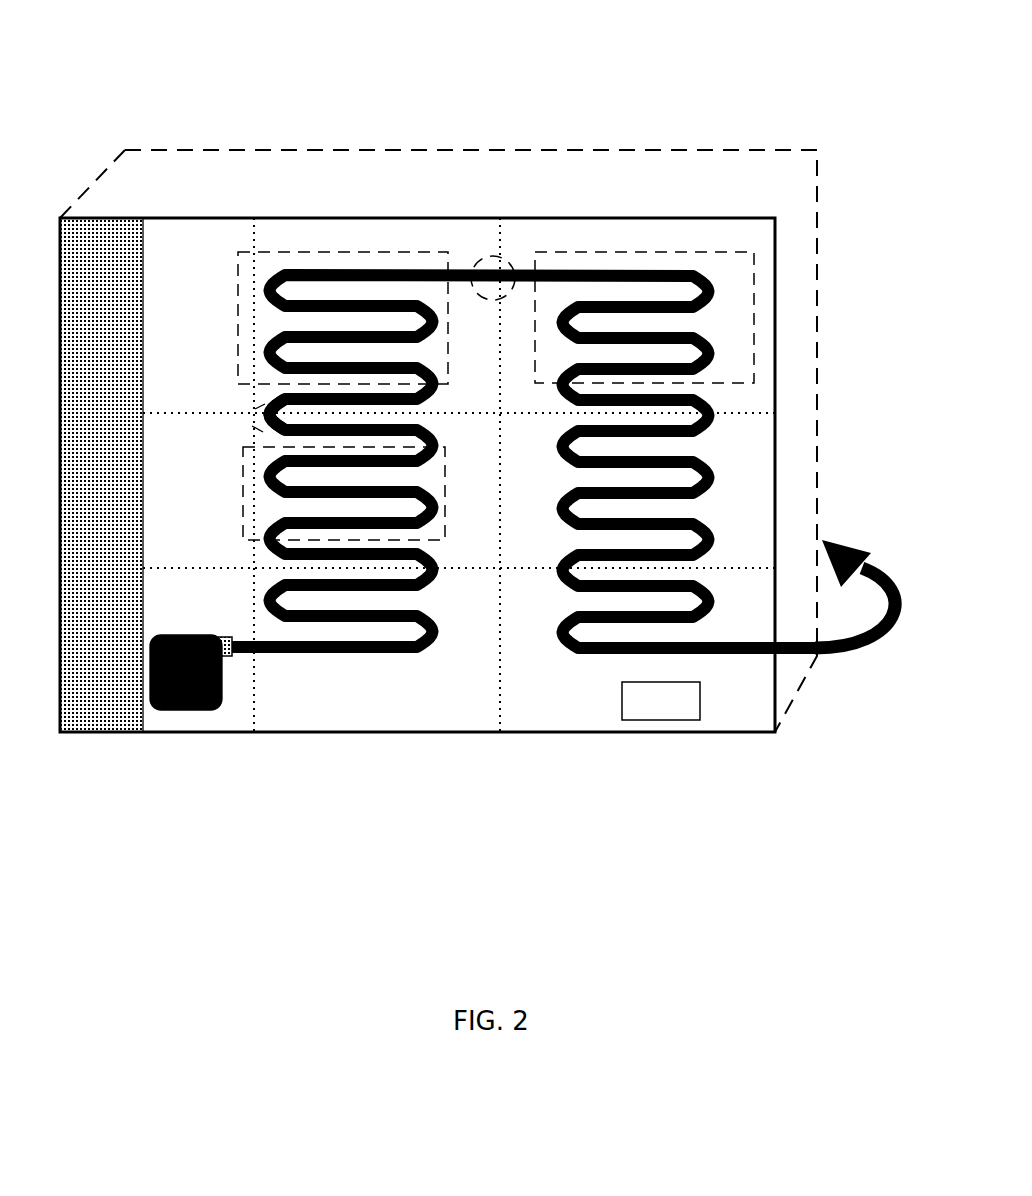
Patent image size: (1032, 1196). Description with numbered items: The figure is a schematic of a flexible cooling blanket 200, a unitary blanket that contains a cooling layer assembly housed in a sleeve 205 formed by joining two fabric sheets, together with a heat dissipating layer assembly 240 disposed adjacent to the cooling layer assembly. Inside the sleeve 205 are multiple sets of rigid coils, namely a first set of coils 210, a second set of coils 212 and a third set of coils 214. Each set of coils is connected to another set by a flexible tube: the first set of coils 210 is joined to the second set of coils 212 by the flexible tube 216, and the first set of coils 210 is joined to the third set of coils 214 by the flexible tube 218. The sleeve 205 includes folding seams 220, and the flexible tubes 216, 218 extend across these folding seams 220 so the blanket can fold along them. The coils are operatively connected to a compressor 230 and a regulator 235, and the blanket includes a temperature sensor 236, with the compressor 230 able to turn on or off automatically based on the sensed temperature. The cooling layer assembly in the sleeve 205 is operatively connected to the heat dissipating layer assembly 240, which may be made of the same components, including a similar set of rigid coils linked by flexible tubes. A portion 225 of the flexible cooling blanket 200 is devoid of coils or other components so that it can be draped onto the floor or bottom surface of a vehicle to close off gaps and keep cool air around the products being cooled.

The flexible cooling blanket 200 is at (709, 62).
The sleeve 205 is at (652, 209).
The first set of coils 210 is at (334, 248).
The second set of coils 212 is at (760, 297).
The third set of coils 214 is at (237, 498).
The flexible tube 216 is at (484, 264).
The flexible tube 218 is at (245, 413).
The folding seams 220 is at (500, 682).
The portion devoid of coils 225 is at (108, 268).
The compressor 230 is at (182, 720).
The regulator 235 is at (236, 667).
The temperature sensor 236 is at (661, 701).
The heat dissipating layer assembly 240 is at (822, 530).